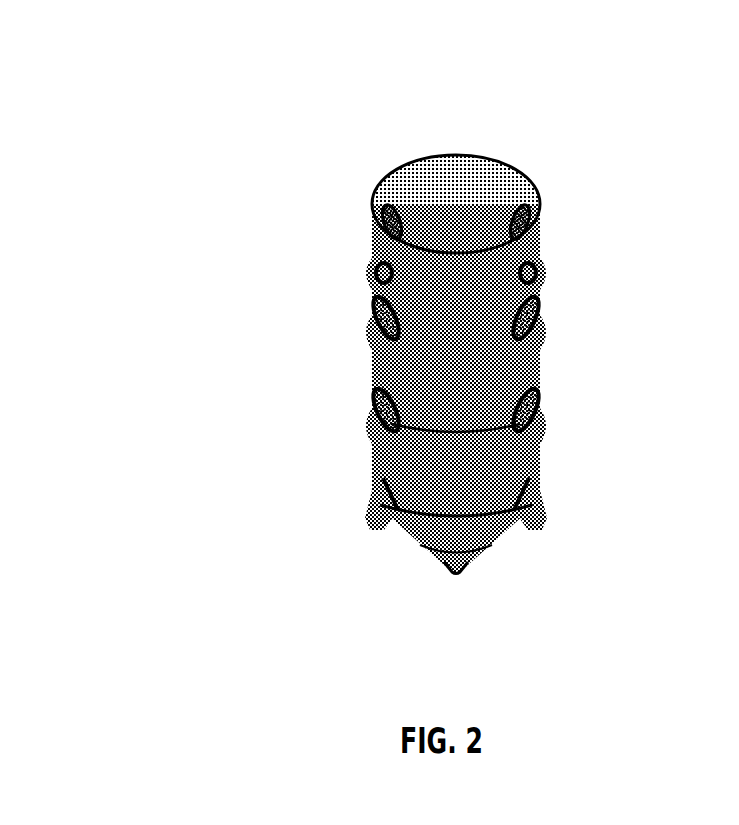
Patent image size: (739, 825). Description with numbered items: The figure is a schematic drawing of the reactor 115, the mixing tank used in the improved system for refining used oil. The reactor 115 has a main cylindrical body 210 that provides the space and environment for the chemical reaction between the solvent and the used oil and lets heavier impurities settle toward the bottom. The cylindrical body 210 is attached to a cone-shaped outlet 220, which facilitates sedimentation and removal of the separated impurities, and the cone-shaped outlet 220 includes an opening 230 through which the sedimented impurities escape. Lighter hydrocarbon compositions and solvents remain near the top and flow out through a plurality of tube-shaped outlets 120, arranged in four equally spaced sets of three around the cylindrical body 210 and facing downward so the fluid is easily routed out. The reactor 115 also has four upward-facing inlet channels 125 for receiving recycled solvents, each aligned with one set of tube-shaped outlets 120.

The reactor 115 is at (164, 41).
The main cylindrical body 210 is at (498, 165).
The inlet channels 125 is at (387, 273).
The tube-shaped outlets 120 is at (370, 333).
The cone-shaped outlet 220 is at (422, 543).
The opening 230 is at (463, 573).